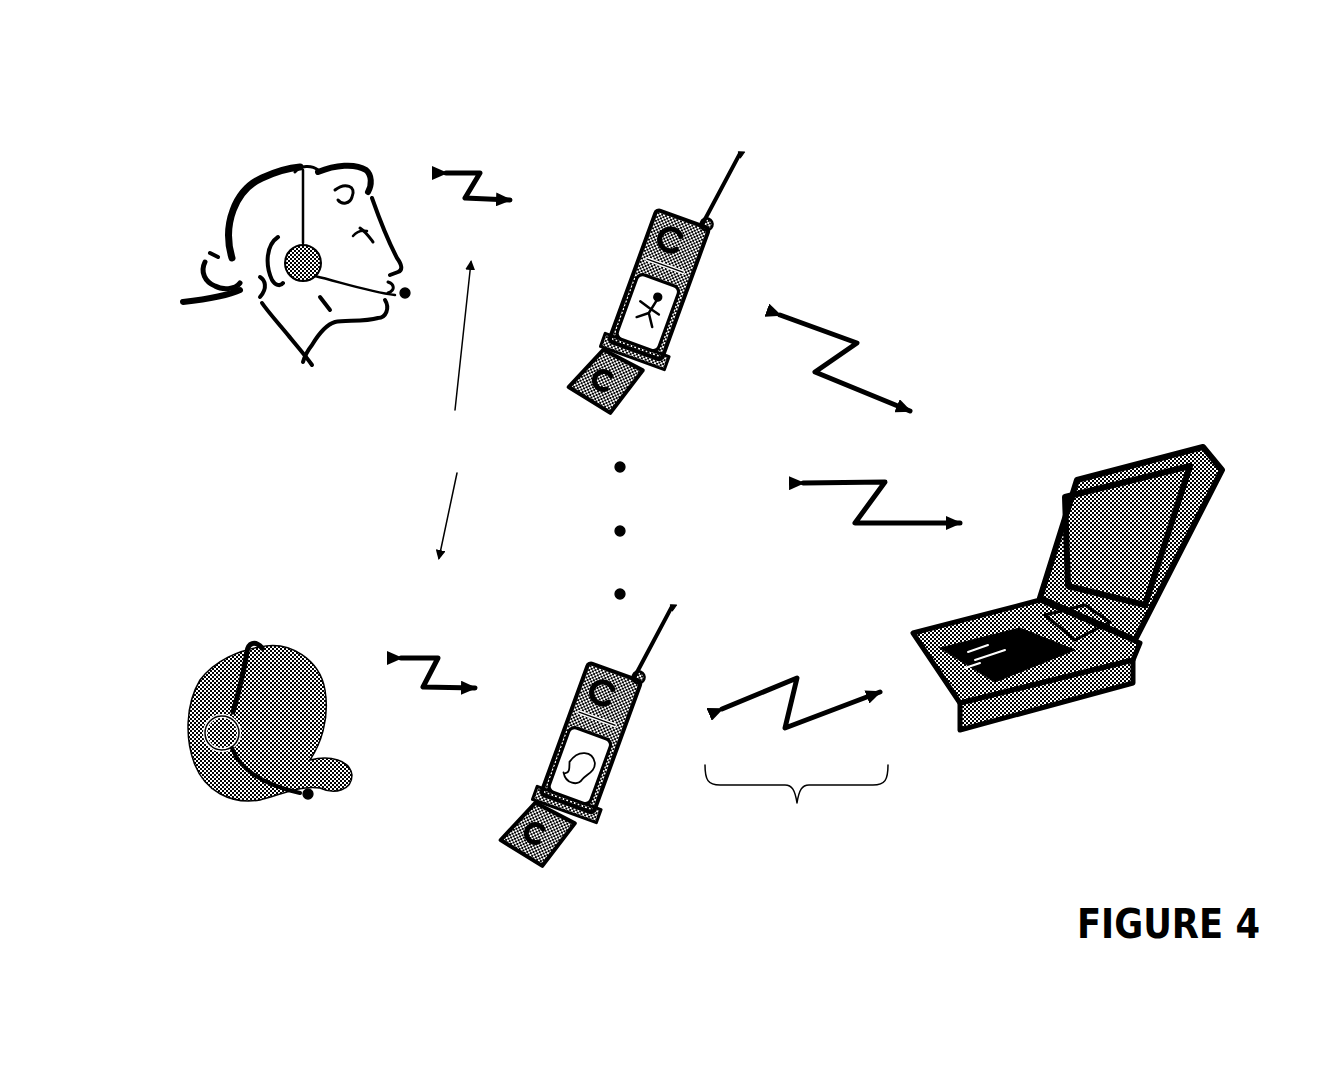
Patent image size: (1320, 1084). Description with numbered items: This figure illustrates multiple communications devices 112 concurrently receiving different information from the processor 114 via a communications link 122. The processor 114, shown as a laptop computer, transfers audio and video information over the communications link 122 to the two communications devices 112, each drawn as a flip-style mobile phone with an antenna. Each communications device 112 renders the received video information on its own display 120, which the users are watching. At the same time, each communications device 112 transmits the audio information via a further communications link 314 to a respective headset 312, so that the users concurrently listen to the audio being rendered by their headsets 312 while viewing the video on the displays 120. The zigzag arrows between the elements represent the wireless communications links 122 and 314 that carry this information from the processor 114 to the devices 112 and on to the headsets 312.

The communications device 112 is at (557, 503).
The processor 114 is at (1128, 430).
The display 120 is at (682, 351).
The communications link 122 is at (796, 805).
The headset 312 is at (280, 477).
The communications link 314 is at (454, 410).